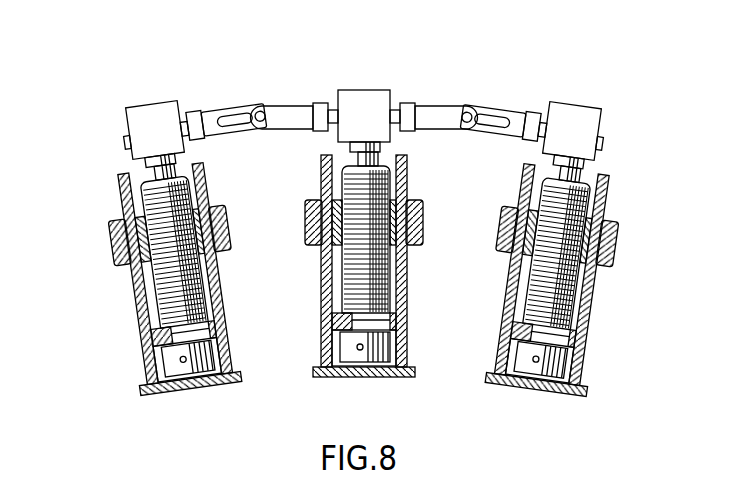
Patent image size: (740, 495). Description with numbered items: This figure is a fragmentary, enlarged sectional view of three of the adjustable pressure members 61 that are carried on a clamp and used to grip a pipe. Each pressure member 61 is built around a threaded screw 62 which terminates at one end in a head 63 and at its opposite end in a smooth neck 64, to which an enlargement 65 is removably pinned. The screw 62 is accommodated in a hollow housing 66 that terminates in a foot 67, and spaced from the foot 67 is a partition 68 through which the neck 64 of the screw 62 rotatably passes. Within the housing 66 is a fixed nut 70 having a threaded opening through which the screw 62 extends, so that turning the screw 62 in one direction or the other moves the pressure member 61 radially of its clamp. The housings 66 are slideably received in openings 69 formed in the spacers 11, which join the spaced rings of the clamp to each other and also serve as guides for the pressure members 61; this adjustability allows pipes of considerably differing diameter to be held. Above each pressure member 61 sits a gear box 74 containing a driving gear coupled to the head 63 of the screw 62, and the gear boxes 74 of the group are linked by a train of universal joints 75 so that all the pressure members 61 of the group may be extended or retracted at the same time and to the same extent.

The spacer 11 is at (500, 229).
The pressure member 61 is at (112, 334).
The threaded screw 62 is at (345, 274).
The head 63 is at (383, 146).
The smooth neck 64 is at (340, 323).
The enlargement 65 is at (518, 358).
The hollow housing 66 is at (322, 305).
The foot 67 is at (505, 386).
The partition 68 is at (517, 333).
The opening 69 is at (320, 200).
The nut 70 is at (390, 205).
The gear box 74 is at (148, 120).
The universal joint 75 is at (422, 83).